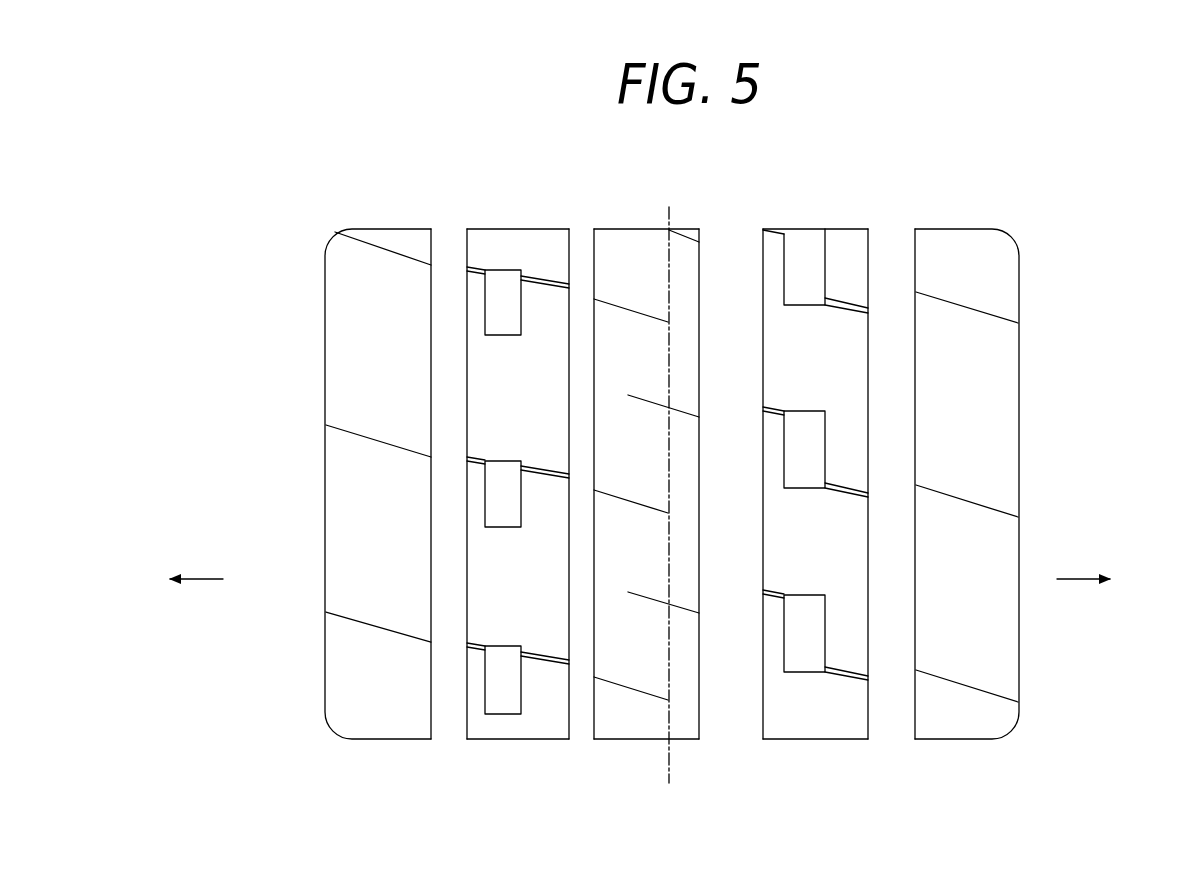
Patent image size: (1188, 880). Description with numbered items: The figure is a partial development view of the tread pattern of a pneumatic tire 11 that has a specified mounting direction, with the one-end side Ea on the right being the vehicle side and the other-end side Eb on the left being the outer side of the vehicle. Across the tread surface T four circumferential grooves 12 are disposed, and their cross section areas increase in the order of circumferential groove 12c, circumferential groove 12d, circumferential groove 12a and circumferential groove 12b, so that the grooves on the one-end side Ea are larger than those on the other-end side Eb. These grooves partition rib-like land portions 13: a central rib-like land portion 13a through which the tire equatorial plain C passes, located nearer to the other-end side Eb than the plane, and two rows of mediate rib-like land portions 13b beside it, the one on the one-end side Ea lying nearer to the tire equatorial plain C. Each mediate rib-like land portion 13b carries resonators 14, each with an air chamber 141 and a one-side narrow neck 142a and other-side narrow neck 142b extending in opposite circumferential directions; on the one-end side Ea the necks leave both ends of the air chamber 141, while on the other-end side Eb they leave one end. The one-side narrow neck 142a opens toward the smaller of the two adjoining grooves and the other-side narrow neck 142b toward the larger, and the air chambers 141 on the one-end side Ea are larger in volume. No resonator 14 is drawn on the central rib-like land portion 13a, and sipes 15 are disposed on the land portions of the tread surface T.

The pneumatic tire 11 is at (1038, 207).
The tread surface T is at (1059, 250).
The circumferential groove 12 is at (675, 524).
The circumferential groove 12a is at (898, 733).
The circumferential groove 12b is at (743, 735).
The circumferential groove 12c is at (579, 738).
The circumferential groove 12d is at (447, 740).
The rib-like land portion 13 is at (952, 222).
The central rib-like land portion 13a is at (613, 226).
The mediate rib-like land portion 13b is at (495, 225).
The resonator 14 is at (183, 368).
The air chamber 141 is at (483, 517).
The one-side narrow neck 142a is at (548, 465).
The other-side narrow neck 142b is at (478, 467).
The sipe 15 is at (335, 615).
The tire equatorial plain C is at (670, 478).
The one-end side Ea is at (1083, 561).
The other-end side Eb is at (196, 561).